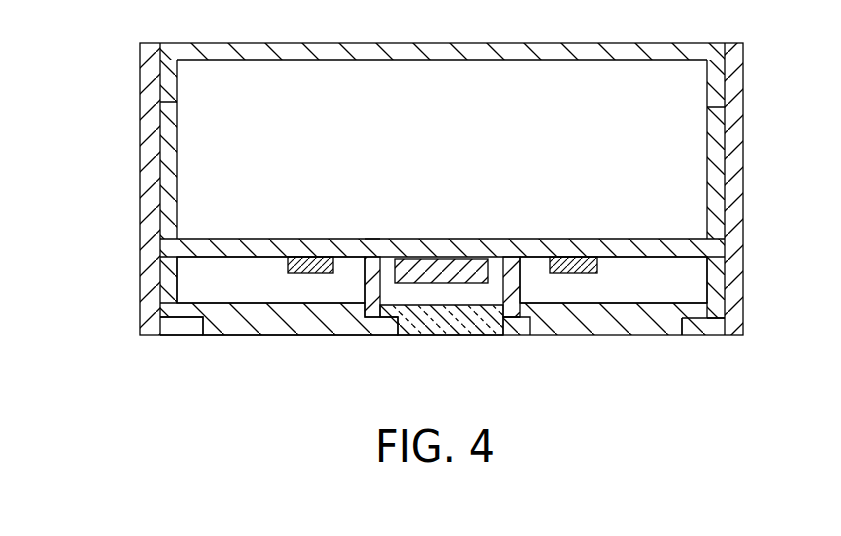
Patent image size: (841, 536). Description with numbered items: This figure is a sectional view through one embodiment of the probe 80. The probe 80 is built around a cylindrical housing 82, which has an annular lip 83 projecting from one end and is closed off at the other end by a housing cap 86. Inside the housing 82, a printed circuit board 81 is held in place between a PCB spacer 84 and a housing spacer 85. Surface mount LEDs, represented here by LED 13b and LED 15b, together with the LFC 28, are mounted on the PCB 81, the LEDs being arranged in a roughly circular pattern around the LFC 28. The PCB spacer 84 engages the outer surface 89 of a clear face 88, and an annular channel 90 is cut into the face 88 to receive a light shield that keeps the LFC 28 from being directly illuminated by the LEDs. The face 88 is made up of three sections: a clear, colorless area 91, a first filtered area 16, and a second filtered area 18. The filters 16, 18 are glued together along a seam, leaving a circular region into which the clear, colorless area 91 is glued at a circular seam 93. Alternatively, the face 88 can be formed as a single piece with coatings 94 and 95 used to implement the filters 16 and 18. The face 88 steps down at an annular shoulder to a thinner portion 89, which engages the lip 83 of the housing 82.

The probe 80 is at (128, 101).
The cylindrical housing 82 is at (740, 173).
The housing cap 86 is at (628, 43).
The housing spacer 85 is at (713, 137).
The PCB spacer 84 is at (720, 282).
The printed circuit board 81 is at (373, 243).
The first filtered area 16 is at (277, 323).
The second filtered area 18 is at (628, 332).
The circular seam 93 is at (395, 328).
The clear, colorless area 91 is at (477, 320).
The clear face 88 is at (440, 334).
The annular channel 90 is at (507, 327).
The LFC 28 is at (463, 273).
The surface mount LED 13b is at (323, 242).
The surface mount LED 15b is at (577, 256).
The coating 94 is at (245, 302).
The coating 95 is at (632, 302).
The annular lip 83 is at (188, 322).
The outer surface 89 is at (172, 318).